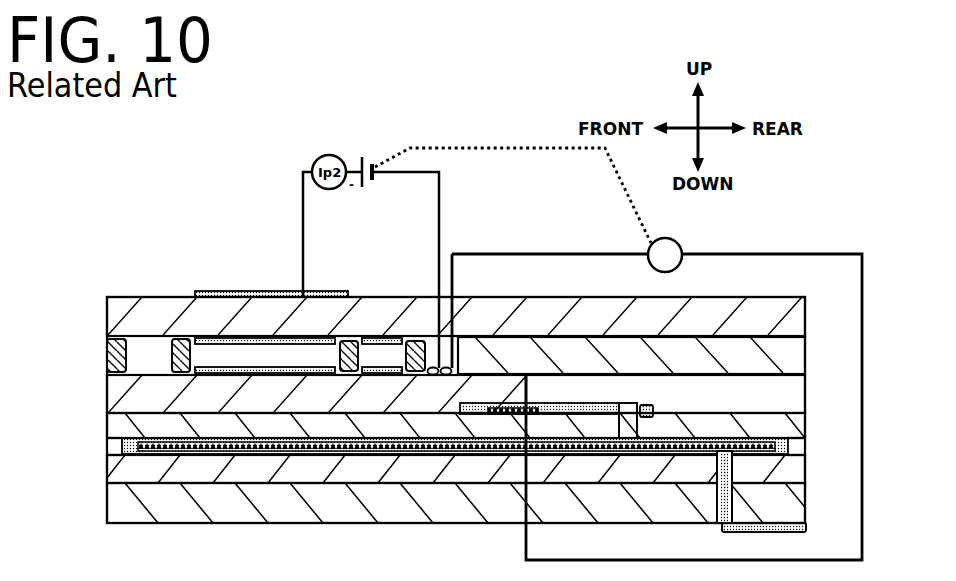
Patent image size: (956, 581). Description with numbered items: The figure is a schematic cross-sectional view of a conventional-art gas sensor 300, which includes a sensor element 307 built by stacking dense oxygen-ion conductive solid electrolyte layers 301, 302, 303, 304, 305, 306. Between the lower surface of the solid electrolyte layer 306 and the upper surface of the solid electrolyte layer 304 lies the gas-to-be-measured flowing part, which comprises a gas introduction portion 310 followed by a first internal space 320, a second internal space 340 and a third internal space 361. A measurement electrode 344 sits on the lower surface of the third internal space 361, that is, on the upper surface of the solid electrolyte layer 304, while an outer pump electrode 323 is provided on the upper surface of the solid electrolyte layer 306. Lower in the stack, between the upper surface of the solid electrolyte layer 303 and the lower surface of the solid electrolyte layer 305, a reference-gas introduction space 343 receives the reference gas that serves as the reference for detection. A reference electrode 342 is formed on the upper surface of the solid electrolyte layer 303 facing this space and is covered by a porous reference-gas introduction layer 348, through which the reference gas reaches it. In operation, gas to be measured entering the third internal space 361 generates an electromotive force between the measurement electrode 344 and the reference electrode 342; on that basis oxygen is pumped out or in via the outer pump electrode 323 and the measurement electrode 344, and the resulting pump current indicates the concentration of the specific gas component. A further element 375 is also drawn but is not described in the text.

The gas sensor 300 is at (764, 190).
The solid electrolyte layer 301 is at (806, 499).
The solid electrolyte layer 302 is at (806, 469).
The solid electrolyte layer 303 is at (806, 426).
The solid electrolyte layer 304 is at (110, 392).
The solid electrolyte layer 305 is at (806, 344).
The solid electrolyte layer 306 is at (806, 318).
The sensor element 307 is at (457, 325).
The gas introduction portion 310 is at (104, 353).
The first internal space 320 is at (312, 352).
The outer pump electrode 323 is at (225, 294).
The second internal space 340 is at (377, 352).
The reference electrode 342 is at (522, 415).
The reference-gas introduction space 343 is at (805, 393).
The measurement electrode 344 is at (440, 378).
The reference-gas introduction layer 348 is at (546, 403).
The third internal space 361 is at (455, 350).
The through-hole conductor 375 is at (632, 403).